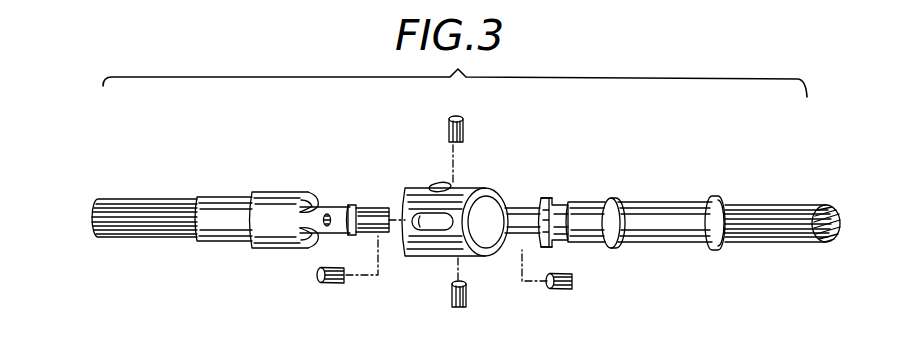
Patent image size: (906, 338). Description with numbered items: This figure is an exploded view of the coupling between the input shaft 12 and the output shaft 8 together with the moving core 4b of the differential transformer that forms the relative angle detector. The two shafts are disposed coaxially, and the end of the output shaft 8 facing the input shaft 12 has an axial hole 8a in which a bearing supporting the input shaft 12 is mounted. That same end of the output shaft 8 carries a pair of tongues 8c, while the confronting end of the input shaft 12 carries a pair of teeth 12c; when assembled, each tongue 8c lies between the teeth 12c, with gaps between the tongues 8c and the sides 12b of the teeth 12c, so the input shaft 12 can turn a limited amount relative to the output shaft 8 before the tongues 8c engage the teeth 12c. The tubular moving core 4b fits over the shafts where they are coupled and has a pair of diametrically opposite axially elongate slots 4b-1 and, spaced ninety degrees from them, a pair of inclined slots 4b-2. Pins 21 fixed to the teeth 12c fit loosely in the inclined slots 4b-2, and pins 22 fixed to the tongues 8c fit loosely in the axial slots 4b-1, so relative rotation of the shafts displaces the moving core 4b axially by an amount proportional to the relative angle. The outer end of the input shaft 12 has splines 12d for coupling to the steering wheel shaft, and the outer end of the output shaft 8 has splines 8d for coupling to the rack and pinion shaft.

The output shaft 8 is at (228, 205).
The axial hole 8a is at (319, 196).
The tongues 8c is at (348, 210).
The splines 8d is at (138, 206).
The moving core 4b is at (460, 219).
The axially elongate slots 4b-1 is at (436, 226).
The inclined slots 4b-2 is at (450, 185).
The pins 21 is at (464, 125).
The pins 22 is at (333, 285).
The input shaft 12 is at (681, 210).
The sides of the teeth 12b is at (551, 208).
The teeth 12c is at (556, 200).
The splines 12d is at (783, 207).